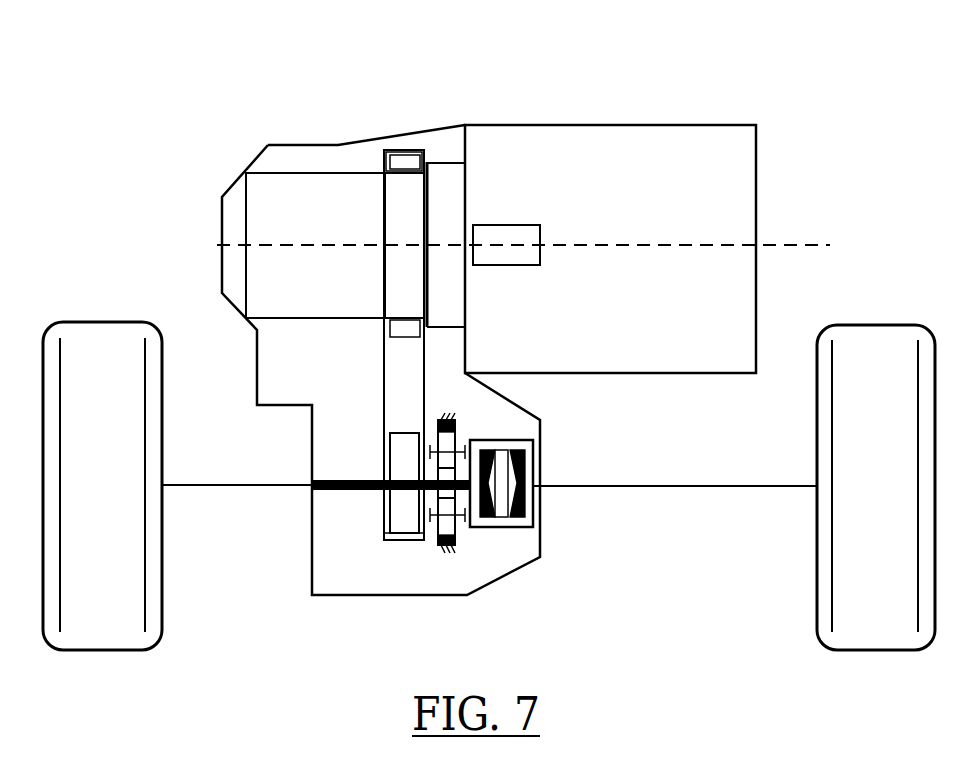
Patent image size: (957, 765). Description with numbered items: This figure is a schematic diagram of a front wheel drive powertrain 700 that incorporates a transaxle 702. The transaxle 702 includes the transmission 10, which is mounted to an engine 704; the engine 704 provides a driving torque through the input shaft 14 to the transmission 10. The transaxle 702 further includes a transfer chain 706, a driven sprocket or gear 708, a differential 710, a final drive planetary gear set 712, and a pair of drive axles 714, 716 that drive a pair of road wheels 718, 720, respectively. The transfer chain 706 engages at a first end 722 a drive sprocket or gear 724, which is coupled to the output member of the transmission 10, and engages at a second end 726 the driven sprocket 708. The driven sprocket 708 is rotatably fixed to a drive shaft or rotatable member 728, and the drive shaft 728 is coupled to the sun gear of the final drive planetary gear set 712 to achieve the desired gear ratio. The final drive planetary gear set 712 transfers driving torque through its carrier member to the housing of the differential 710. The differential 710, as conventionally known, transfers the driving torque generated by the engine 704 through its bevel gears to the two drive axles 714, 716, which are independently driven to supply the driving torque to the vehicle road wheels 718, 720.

The front wheel drive powertrain 700 is at (724, 100).
The transaxle 702 is at (340, 134).
The engine 704 is at (575, 124).
The transmission 10 is at (353, 238).
The input shaft 14 is at (445, 243).
The transfer chain 706 is at (384, 385).
The driven sprocket or gear 708 is at (400, 463).
The differential 710 is at (513, 541).
The final drive planetary gear set 712 is at (456, 565).
The drive axle 714 is at (188, 484).
The drive axle 716 is at (630, 485).
The road wheel 718 is at (92, 321).
The road wheel 720 is at (857, 324).
The first end 722 is at (390, 151).
The drive sprocket or gear 724 is at (401, 162).
The second end 726 is at (395, 532).
The drive shaft or rotatable member 728 is at (423, 497).